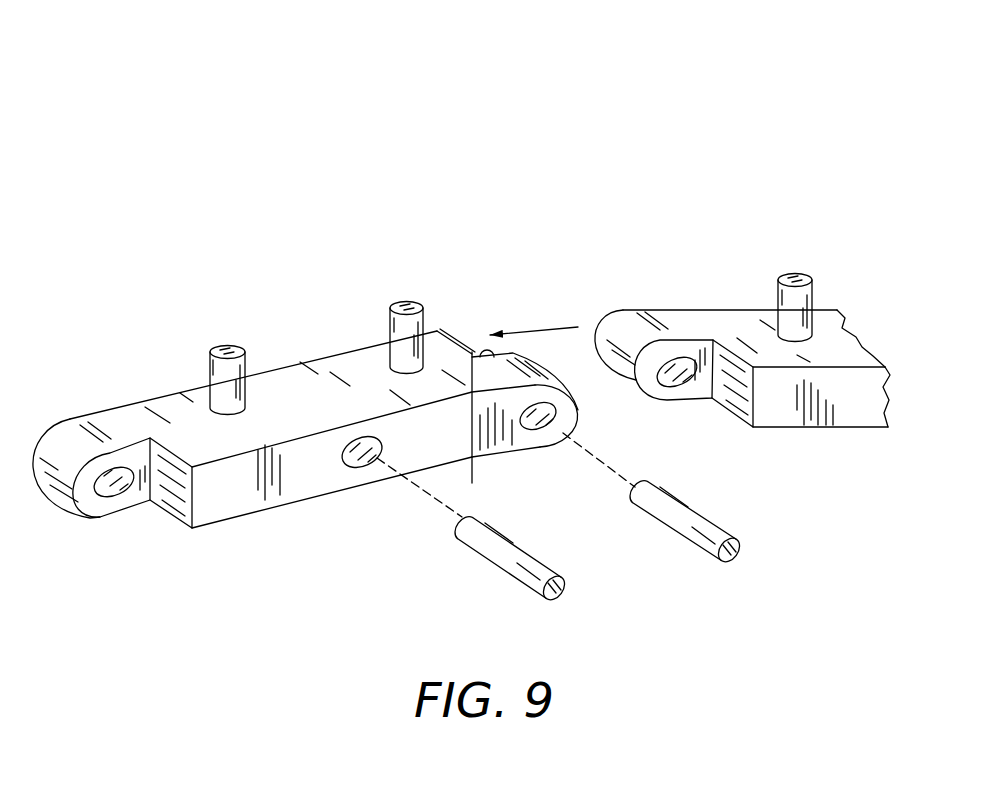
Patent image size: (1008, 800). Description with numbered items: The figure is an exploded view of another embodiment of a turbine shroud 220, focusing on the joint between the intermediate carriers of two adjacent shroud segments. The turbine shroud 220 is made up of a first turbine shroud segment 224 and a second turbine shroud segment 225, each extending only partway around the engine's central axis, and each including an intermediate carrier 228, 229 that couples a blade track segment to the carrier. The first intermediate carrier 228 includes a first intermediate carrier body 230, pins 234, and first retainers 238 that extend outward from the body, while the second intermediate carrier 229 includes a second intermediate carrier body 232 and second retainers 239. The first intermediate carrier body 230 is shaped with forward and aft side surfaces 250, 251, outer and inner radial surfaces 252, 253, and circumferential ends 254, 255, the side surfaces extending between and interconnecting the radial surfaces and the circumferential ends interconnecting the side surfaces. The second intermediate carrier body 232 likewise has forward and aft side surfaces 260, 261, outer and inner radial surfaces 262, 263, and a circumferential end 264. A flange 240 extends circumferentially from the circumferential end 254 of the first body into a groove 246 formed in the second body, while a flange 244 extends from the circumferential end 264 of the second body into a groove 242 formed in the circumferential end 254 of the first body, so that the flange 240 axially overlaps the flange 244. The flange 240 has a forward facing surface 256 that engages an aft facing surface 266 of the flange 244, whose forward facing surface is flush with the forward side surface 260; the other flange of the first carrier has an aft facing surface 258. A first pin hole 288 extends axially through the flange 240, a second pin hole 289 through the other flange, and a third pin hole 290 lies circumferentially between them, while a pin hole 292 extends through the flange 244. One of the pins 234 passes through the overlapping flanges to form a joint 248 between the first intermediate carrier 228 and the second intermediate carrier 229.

The turbine shroud 220 is at (115, 100).
The first turbine shroud segment 224 is at (180, 213).
The second turbine shroud segment 225 is at (685, 125).
The first intermediate carrier 228 is at (272, 210).
The second intermediate carrier 229 is at (632, 178).
The first intermediate carrier body 230 is at (260, 358).
The second intermediate carrier body 232 is at (741, 325).
The pins 234 is at (488, 567).
The first retainers 238 is at (220, 343).
The second retainers 239 is at (790, 278).
The flange 240 is at (586, 424).
The groove 242 is at (470, 345).
The flange 244 is at (42, 447).
The groove 246 is at (135, 458).
The joint 248 is at (537, 295).
The forward side surface 250 is at (300, 352).
The aft side surface 251 is at (212, 500).
The outer radial surface 252 is at (358, 360).
The inner radial surface 253 is at (307, 500).
The circumferential end 254 is at (448, 332).
The circumferential end 255 is at (163, 493).
The forward facing surface 256 is at (472, 481).
The aft facing surface 258 is at (100, 517).
The forward side surface 260 is at (822, 312).
The aft side surface 261 is at (847, 410).
The outer radial surface 262 is at (847, 327).
The inner radial surface 263 is at (807, 427).
The circumferential end 264 is at (743, 403).
The aft facing surface 266 is at (665, 350).
The first pin hole 288 is at (540, 424).
The second pin hole 289 is at (108, 488).
The third pin hole 290 is at (363, 456).
The pin hole 292 is at (683, 378).